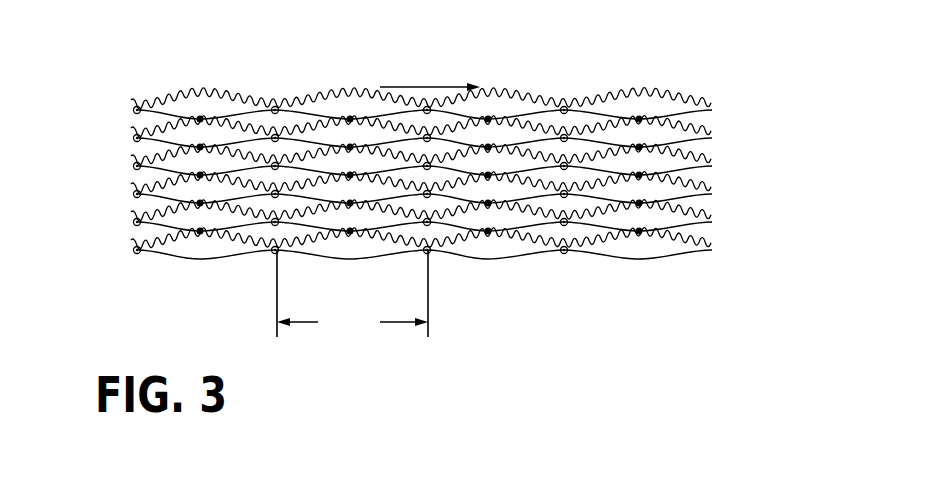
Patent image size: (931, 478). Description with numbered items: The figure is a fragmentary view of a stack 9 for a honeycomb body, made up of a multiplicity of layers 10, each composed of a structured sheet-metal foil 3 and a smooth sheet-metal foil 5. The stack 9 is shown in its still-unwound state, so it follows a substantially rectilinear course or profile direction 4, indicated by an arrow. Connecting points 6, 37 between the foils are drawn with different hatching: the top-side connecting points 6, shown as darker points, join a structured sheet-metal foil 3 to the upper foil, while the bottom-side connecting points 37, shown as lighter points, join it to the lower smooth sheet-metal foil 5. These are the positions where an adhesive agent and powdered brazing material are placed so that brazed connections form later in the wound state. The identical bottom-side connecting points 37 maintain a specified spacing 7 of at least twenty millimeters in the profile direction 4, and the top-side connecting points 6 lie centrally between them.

The structured sheet-metal foil 3 is at (320, 98).
The profile direction 4 is at (420, 88).
The smooth sheet-metal foil 5 is at (240, 115).
The top-side connecting point 6 is at (200, 175).
The spacing 7 is at (352, 296).
The stack 9 is at (780, 98).
The layer 10 is at (715, 230).
The bottom-side connecting point 37 is at (134, 165).